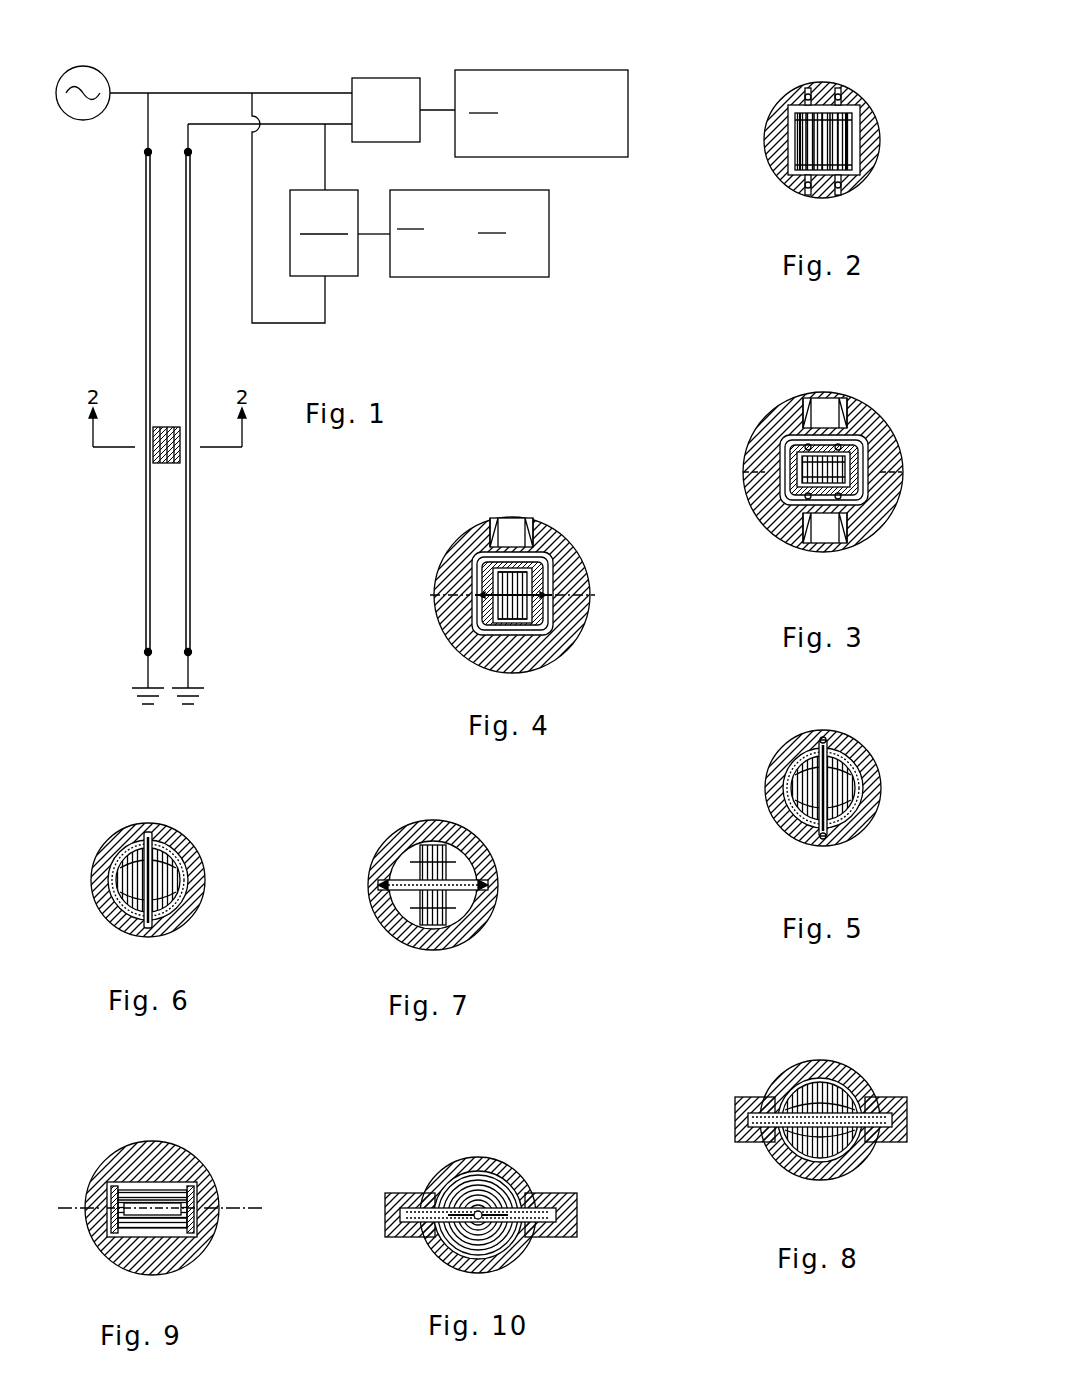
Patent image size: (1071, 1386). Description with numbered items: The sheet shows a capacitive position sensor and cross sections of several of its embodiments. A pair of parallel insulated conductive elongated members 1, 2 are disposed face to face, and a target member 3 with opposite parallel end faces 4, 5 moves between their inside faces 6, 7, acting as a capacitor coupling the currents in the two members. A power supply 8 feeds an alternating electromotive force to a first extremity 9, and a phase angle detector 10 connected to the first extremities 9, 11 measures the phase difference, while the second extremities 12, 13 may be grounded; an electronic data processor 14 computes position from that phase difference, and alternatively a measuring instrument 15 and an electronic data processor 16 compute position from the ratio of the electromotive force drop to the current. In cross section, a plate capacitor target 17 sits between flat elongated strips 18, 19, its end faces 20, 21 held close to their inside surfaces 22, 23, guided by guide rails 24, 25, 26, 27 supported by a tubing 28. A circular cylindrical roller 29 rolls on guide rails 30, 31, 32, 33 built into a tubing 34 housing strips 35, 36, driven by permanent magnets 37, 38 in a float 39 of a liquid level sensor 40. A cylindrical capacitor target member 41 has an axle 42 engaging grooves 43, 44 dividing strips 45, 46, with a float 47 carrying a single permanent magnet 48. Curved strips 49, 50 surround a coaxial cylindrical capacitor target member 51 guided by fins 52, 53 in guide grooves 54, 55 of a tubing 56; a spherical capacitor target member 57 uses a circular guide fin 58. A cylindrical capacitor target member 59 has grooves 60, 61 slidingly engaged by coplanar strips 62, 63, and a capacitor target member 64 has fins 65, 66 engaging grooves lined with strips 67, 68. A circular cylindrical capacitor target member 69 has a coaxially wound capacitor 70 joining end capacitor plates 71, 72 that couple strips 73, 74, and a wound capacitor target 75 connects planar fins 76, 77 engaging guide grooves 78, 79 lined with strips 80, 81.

In FIG. 1, the elongated member 1 is at (144, 296).
In FIG. 1, the elongated member 2 is at (190, 296).
In FIG. 1, the target member 3 is at (164, 427).
In FIG. 1, the end face 4 is at (153, 463).
In FIG. 1, the end face 5 is at (180, 463).
In FIG. 1, the inside face 6 is at (150, 559).
In FIG. 1, the inside face 7 is at (186, 559).
In FIG. 1, the power supply 8 is at (92, 65).
In FIG. 1, the first extremity 9 is at (144, 152).
In FIG. 1, the phase angle detector 10 is at (388, 78).
In FIG. 1, the first extremity 11 is at (192, 152).
In FIG. 1, the second extremity 12 is at (146, 652).
In FIG. 1, the second extremity 13 is at (188, 652).
In FIG. 1, the electronic data processor 14 is at (550, 70).
In FIG. 1, the measuring instrument 15 is at (350, 276).
In FIG. 1, the electronic data processor 16 is at (460, 277).
In FIG. 2, the capacitor target 17 is at (858, 162).
In FIG. 2, the elongated strip 18 is at (795, 114).
In FIG. 2, the elongated strip 19 is at (852, 118).
In FIG. 2, the end face 20 is at (792, 146).
In FIG. 2, the end face 21 is at (860, 138).
In FIG. 2, the inside surface 22 is at (808, 90).
In FIG. 2, the inside surface 23 is at (838, 90).
In FIG. 2, the guide rail 24 is at (808, 90).
In FIG. 2, the guide rail 25 is at (838, 90).
In FIG. 2, the guide rail 26 is at (808, 182).
In FIG. 2, the guide rail 27 is at (838, 180).
In FIG. 2, the tubing 28 is at (788, 142).
In FIG. 3, the circular cylindrical roller 29 is at (780, 446).
In FIG. 3, the guide rail 30 is at (802, 426).
In FIG. 3, the guide rail 31 is at (846, 428).
In FIG. 3, the guide rail 32 is at (807, 502).
In FIG. 3, the guide rail 33 is at (838, 496).
In FIG. 3, the tubing 34 is at (760, 488).
In FIG. 3, the elongated strip 35 is at (792, 440).
In FIG. 3, the elongated strip 36 is at (858, 450).
In FIG. 3, the permanent magnet 37 is at (826, 398).
In FIG. 3, the permanent magnet 38 is at (824, 543).
In FIG. 3, the float 39 is at (756, 472).
In FIG. 3, the liquid level sensor 40 is at (762, 504).
In FIG. 4, the circular cylindrical capacitor target member 41 is at (490, 662).
In FIG. 4, the coil 42 is at (479, 594).
In FIG. 4, the groove 43 is at (486, 568).
In FIG. 4, the groove 44 is at (544, 572).
In FIG. 4, the elongated strip 45 is at (474, 616).
In FIG. 4, the elongated strip 46 is at (538, 612).
In FIG. 4, the float 47 is at (470, 561).
In FIG. 4, the permanent magnet 48 is at (512, 518).
In FIG. 5, the elongated strip 49 is at (786, 780).
In FIG. 5, the elongated strip 50 is at (854, 780).
In FIG. 5, the capacitor target member 51 is at (814, 752).
In FIG. 5, the fin 52 is at (842, 752).
In FIG. 5, the fin 53 is at (812, 838).
In FIG. 5, the guide groove 54 is at (823, 740).
In FIG. 5, the guide groove 55 is at (828, 840).
In FIG. 5, the tubing 56 is at (768, 786).
In FIG. 6, the capacitor target member 57 is at (172, 842).
In FIG. 6, the circular guide fin 58 is at (148, 832).
In FIG. 7, the capacitor target member 59 is at (460, 850).
In FIG. 7, the groove 60 is at (404, 904).
In FIG. 7, the groove 61 is at (466, 878).
In FIG. 7, the elongated strip 62 is at (388, 874).
In FIG. 7, the elongated strip 63 is at (482, 912).
In FIG. 8, the capacitor target member 64 is at (819, 1062).
In FIG. 8, the fin 65 is at (776, 1142).
In FIG. 8, the fin 66 is at (866, 1142).
In FIG. 8, the elongated strip 67 is at (765, 1098).
In FIG. 8, the elongated strip 68 is at (880, 1098).
In FIG. 9, the circular cylindrical capacitor target member 69 is at (186, 1244).
In FIG. 9, the coaxially wound capacitor 70 is at (156, 1182).
In FIG. 9, the end capacitor plate 71 is at (110, 1226).
In FIG. 9, the end capacitor plate 72 is at (190, 1230).
In FIG. 9, the elongated strip 73 is at (108, 1186).
In FIG. 9, the elongated strip 74 is at (196, 1190).
In FIG. 10, the outer casing 75 is at (442, 1172).
In FIG. 10, the planar fin 76 is at (414, 1208).
In FIG. 10, the planar fin 77 is at (536, 1242).
In FIG. 10, the guide groove 78 is at (378, 1203).
In FIG. 10, the guide groove 79 is at (570, 1205).
In FIG. 10, the elongated strip 80 is at (420, 1240).
In FIG. 10, the elongated strip 81 is at (540, 1208).